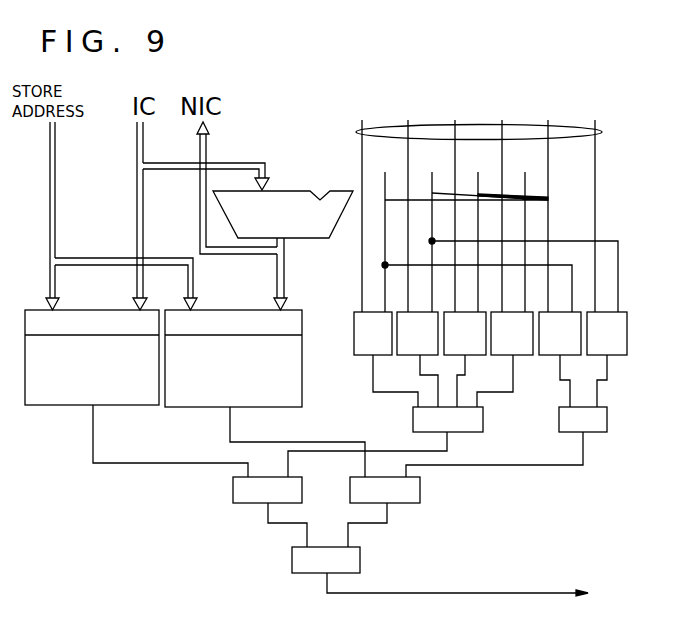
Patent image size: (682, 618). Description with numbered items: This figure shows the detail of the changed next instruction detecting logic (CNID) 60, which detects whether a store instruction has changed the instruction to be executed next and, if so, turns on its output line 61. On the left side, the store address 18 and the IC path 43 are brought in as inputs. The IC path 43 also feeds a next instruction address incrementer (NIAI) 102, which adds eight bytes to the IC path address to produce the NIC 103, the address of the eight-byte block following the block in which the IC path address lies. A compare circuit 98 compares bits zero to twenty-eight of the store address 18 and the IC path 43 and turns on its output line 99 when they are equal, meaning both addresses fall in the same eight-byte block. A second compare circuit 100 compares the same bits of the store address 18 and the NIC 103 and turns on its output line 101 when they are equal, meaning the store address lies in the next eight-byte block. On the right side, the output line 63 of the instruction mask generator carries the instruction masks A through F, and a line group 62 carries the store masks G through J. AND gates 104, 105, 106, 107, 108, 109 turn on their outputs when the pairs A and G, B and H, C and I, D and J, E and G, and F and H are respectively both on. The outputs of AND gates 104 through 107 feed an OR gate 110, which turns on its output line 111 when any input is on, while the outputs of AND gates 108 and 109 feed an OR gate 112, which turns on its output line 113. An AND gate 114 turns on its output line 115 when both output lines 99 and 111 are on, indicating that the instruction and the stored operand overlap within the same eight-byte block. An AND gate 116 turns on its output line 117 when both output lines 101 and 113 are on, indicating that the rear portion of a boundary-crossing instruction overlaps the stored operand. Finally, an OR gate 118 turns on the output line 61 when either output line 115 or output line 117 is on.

The store address 18 is at (56, 142).
The IC path 43 is at (144, 142).
The NIC 103 is at (207, 142).
The next instruction address incrementer 102 is at (289, 190).
The compare circuit 98 is at (95, 310).
The compare circuit 100 is at (237, 310).
The output line 99 is at (94, 422).
The output line 101 is at (231, 422).
The changed next instruction detecting logic 60 is at (405, 82).
The output line of the instruction mask generator 63 is at (602, 132).
The input line group 62 is at (484, 200).
The AND gate 104 is at (357, 357).
The AND gate 105 is at (405, 357).
The AND gate 106 is at (474, 357).
The AND gate 107 is at (520, 357).
The AND gate 108 is at (567, 357).
The AND gate 109 is at (612, 357).
The OR gate 110 is at (484, 419).
The output line 111 is at (448, 443).
The OR gate 112 is at (607, 419).
The output line 113 is at (584, 444).
The AND gate 114 is at (233, 490).
The output line 115 is at (267, 519).
The AND gate 116 is at (420, 490).
The output line 117 is at (388, 519).
The OR gate 118 is at (360, 560).
The output line 61 is at (543, 592).